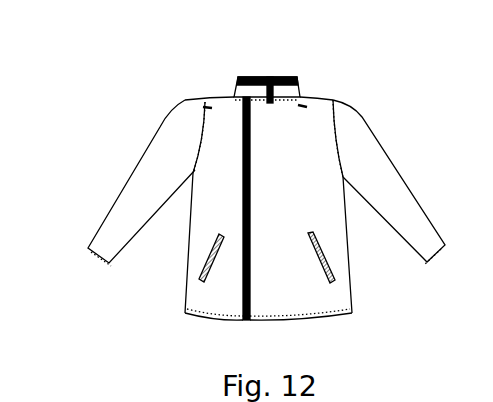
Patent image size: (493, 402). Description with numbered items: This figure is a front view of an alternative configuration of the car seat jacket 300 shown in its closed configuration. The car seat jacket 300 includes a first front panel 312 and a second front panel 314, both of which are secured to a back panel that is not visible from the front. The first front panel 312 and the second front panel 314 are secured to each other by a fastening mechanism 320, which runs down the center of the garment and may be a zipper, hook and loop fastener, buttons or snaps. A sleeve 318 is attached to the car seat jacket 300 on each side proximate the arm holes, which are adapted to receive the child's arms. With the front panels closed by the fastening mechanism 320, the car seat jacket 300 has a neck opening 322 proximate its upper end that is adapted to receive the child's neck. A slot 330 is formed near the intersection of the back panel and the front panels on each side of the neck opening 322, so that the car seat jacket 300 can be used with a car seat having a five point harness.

The car seat jacket 300 is at (392, 70).
The first front panel 312 is at (227, 173).
The second front panel 314 is at (330, 300).
The sleeve 318 is at (112, 223).
The fastening mechanism 320 is at (242, 203).
The neck opening 322 is at (269, 80).
The slot 330 is at (215, 98).